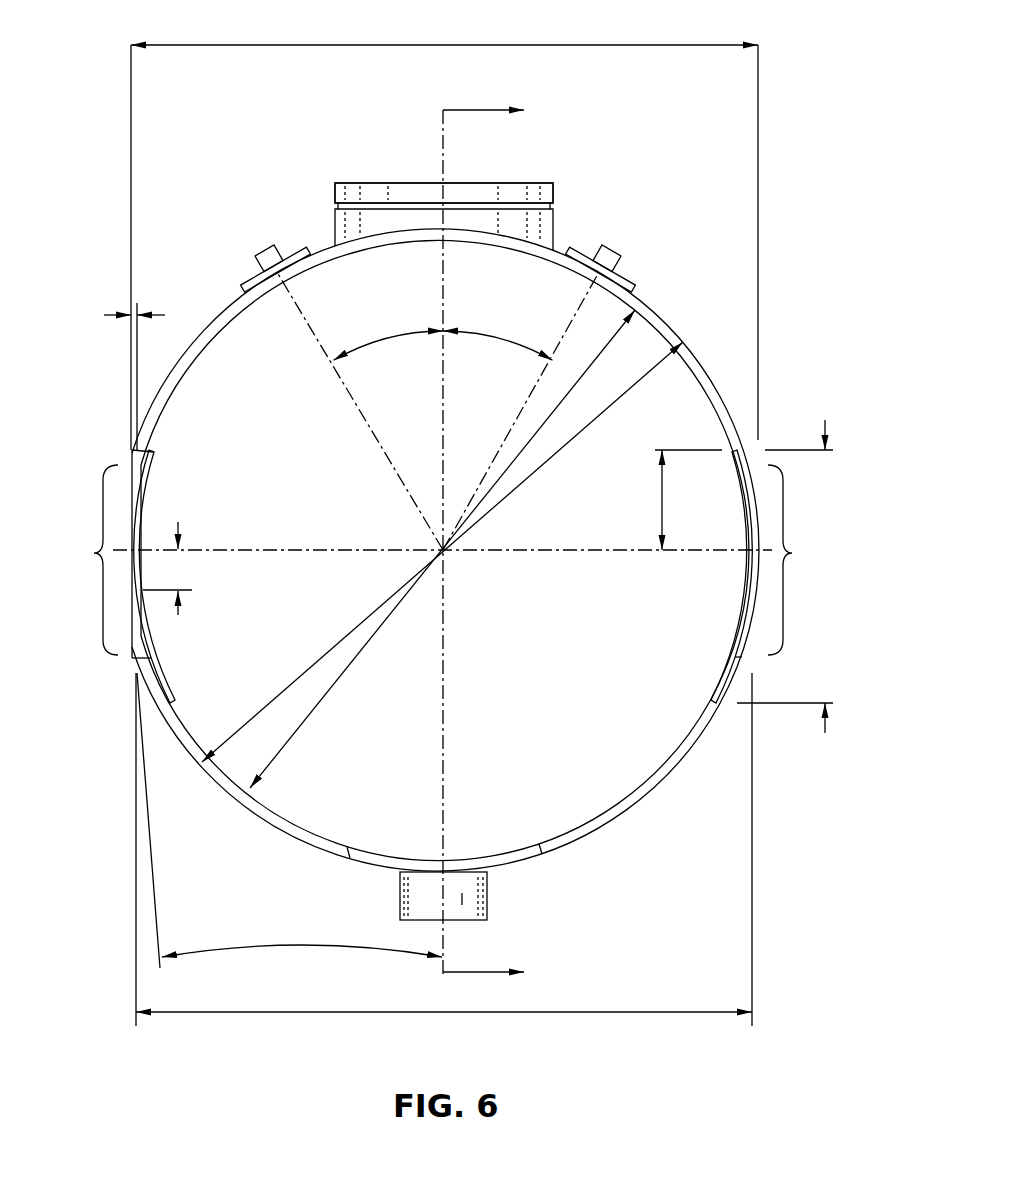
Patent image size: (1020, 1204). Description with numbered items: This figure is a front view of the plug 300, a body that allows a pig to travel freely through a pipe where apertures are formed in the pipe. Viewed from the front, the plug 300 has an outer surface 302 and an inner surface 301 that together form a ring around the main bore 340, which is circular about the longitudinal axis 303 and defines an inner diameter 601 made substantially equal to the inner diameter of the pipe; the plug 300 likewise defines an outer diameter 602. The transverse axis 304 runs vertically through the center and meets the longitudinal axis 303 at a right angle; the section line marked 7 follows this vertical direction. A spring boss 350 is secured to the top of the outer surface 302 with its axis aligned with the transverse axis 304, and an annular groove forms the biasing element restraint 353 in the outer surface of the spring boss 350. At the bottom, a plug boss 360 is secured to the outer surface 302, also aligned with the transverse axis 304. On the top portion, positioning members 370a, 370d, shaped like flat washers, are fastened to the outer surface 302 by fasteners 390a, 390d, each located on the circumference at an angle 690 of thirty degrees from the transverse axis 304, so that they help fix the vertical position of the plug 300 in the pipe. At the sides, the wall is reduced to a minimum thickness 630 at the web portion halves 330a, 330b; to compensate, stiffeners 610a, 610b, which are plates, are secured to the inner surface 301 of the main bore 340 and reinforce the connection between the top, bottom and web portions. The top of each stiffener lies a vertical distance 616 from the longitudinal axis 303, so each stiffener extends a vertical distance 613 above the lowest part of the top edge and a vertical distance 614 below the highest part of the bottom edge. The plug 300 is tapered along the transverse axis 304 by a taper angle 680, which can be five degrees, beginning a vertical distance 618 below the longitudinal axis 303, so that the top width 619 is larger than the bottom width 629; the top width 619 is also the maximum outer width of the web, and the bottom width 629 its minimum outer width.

The plug 300 is at (638, 128).
The inner surface 301 is at (205, 365).
The outer surface 302 is at (630, 825).
The longitudinal axis 303 is at (450, 560).
The transverse axis 304 is at (446, 768).
The main bore 340 is at (615, 813).
The spring boss 350 is at (334, 186).
The biasing element restraint 353 is at (416, 183).
The plug boss 360 is at (488, 907).
The positioning member 370a is at (246, 283).
The positioning member 370d is at (640, 286).
The fastener 390a is at (268, 250).
The fastener 390d is at (624, 258).
The web portion half 330a is at (810, 560).
The web portion half 330b is at (81, 560).
The stiffener 610a is at (722, 677).
The stiffener 610b is at (142, 505).
The inner diameter 601 is at (328, 703).
The outer diameter 602 is at (282, 695).
The vertical distance 613 is at (828, 461).
The vertical distance 614 is at (828, 684).
The vertical distance 616 is at (658, 504).
The vertical distance 618 is at (181, 572).
The top width 619 is at (542, 46).
The bottom width 629 is at (377, 1013).
The minimum thickness 630 is at (126, 313).
The taper angle 680 is at (303, 946).
The angle 690 is at (394, 332).
The section line 7- 7 is at (494, 542).